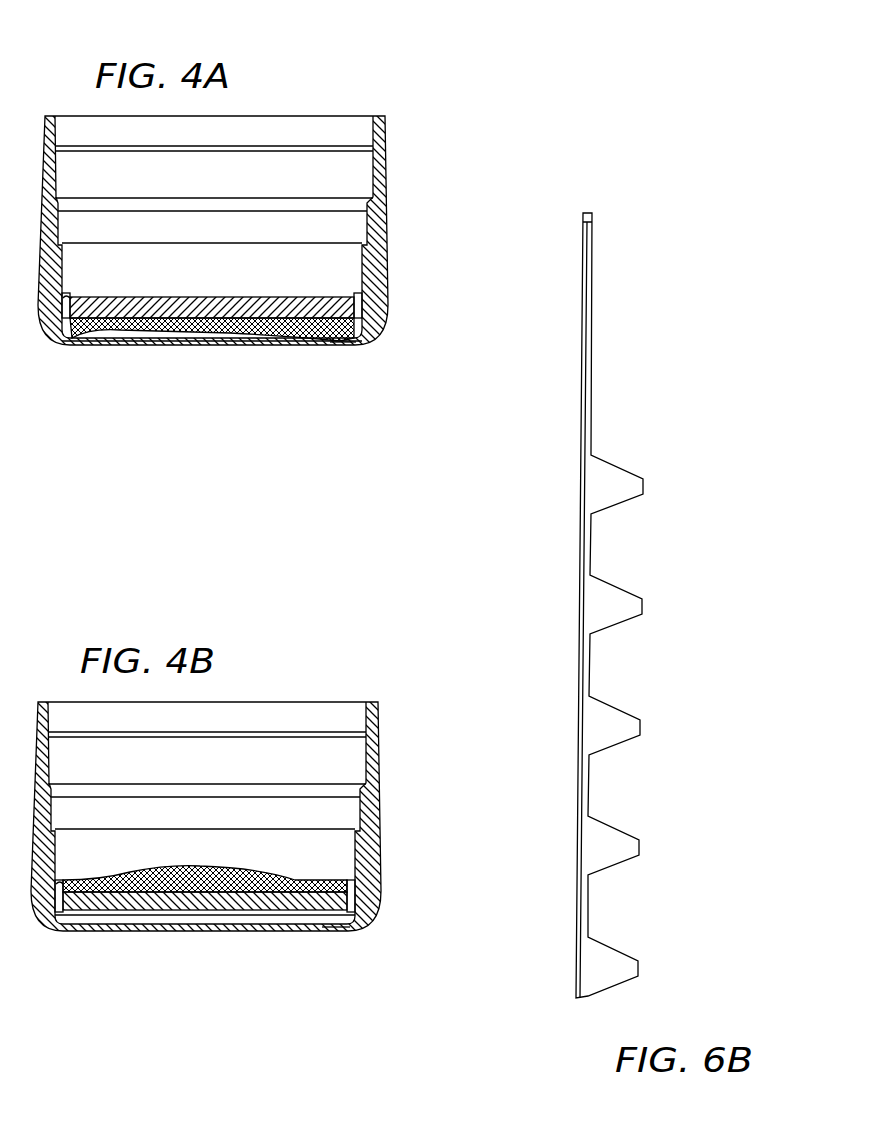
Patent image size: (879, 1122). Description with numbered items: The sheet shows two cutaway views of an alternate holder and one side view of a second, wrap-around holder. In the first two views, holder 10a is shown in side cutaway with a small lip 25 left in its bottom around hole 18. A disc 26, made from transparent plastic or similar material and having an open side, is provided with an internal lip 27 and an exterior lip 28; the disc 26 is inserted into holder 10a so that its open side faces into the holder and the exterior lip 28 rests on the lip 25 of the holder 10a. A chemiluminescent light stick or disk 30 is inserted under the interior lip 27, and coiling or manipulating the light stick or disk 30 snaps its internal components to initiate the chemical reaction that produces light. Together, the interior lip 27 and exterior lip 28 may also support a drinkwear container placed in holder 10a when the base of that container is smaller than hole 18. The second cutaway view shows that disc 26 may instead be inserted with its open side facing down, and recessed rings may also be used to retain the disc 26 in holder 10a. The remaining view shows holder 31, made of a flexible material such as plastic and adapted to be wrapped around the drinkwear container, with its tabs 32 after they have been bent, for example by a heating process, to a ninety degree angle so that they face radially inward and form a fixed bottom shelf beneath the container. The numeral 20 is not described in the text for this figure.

In FIG. 4A, the holder 10a is at (378, 83).
In FIG. 4B, the holder 10a is at (372, 668).
In FIG. 4A, the hole 18 is at (100, 342).
In FIG. 4B, the hole 18 is at (93, 924).
In FIG. 4A, the cap body 20 is at (394, 233).
In FIG. 4B, the cap body 20 is at (386, 811).
In FIG. 4A, the lip 25 is at (335, 340).
In FIG. 4B, the lip 25 is at (330, 930).
In FIG. 4A, the disc 26 is at (132, 335).
In FIG. 4B, the disc 26 is at (312, 873).
In FIG. 4A, the internal lip 27 is at (280, 332).
In FIG. 4B, the internal lip 27 is at (280, 895).
In FIG. 4A, the exterior lip 28 is at (68, 300).
In FIG. 4B, the exterior lip 28 is at (72, 883).
In FIG. 4A, the chemiluminescent light stick or disk 30 is at (330, 302).
In FIG. 4B, the chemiluminescent light stick or disk 30 is at (138, 908).
In FIG. 6B, the holder 31 is at (675, 398).
In FIG. 6B, the tabs 32 is at (621, 588).